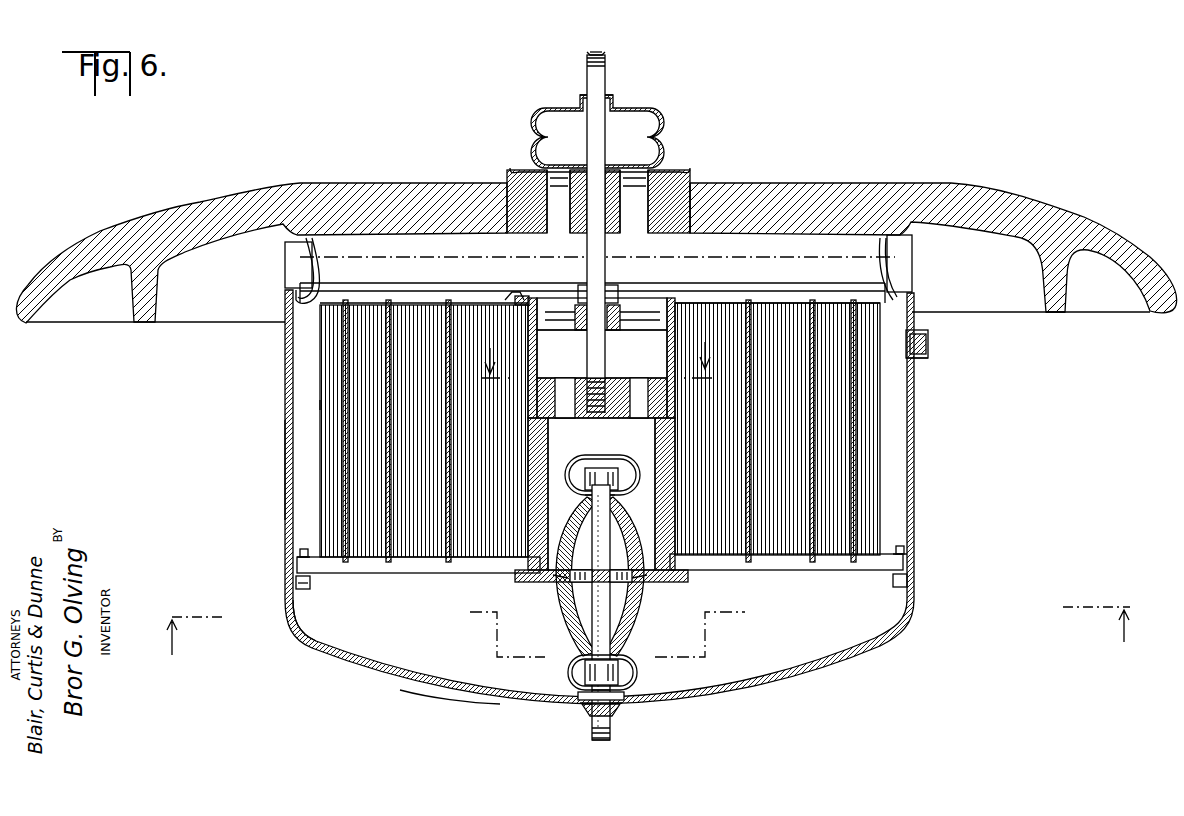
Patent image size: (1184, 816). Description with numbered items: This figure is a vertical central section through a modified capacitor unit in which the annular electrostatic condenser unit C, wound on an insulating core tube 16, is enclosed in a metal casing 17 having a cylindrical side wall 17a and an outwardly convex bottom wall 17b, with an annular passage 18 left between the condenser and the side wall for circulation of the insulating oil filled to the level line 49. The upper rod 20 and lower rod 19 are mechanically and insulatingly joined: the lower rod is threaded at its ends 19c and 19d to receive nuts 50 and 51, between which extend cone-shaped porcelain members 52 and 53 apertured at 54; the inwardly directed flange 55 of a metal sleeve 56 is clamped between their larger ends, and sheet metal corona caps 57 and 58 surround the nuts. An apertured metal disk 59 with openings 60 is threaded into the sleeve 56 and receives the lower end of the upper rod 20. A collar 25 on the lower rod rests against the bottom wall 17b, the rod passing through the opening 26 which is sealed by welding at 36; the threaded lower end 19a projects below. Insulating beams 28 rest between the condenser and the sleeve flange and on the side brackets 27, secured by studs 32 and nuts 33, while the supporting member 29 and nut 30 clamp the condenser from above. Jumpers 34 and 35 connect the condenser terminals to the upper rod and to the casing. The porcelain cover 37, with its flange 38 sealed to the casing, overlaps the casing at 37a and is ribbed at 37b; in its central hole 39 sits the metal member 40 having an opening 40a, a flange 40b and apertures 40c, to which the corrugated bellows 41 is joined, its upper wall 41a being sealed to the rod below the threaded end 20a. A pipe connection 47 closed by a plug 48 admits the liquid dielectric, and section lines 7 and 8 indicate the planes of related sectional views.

The section line 7- 7 is at (643, 625).
The section line 8- 8 is at (597, 365).
The insulating cylinder or tube 16 is at (530, 420).
The metal tank or casing 17 is at (292, 636).
The cylindrical side wall 17a is at (286, 476).
The outwardly convex bottom wall 17b is at (455, 700).
The outer annular passage or channel 18 is at (290, 352).
The lower rod 19 is at (610, 606).
The bolt threaded end 19a is at (606, 738).
The threaded end of lower rod 19c is at (600, 468).
The threaded end of lower rod 19d is at (625, 686).
The upper rod 20 is at (600, 348).
The threaded end portion of upper rod 20a is at (594, 52).
The collar or bushing 25 is at (580, 697).
The opening in bottom wall 26 is at (586, 708).
The supporting brackets 27 is at (302, 586).
The insulating beams or bars 28 is at (404, 573).
The supporting member 29 is at (640, 298).
The nut 30 is at (610, 287).
The threaded studs 32 is at (304, 548).
The nuts 33 is at (298, 556).
The conductor or jumper 34 is at (505, 298).
The jumper 35 is at (318, 286).
The weld 36 is at (618, 712).
The closure disk and insulator 37 is at (328, 180).
The overlapping portion of cover 37a is at (1018, 210).
The petticoat or ribs 37b is at (1068, 305).
The flange 38 is at (287, 256).
The central hole 39 is at (680, 200).
The metal member 40 is at (522, 172).
The central opening 40a is at (590, 210).
The upper peripheral flange 40b is at (680, 172).
The apertures 40c is at (655, 243).
The corrugated sheet metal bellows 41 is at (528, 138).
The upper wall of bellows 41a is at (578, 109).
The pipe connection or nipple 47 is at (913, 360).
The plug or cap 48 is at (929, 344).
The liquid level line 49 is at (402, 257).
The nut 50 is at (640, 478).
The nut 51 is at (618, 672).
The cone-shaped insulating member 52 is at (640, 495).
The cone-shaped insulating member 53 is at (636, 636).
The apertures 54 is at (562, 535).
The inwardly directed flange 55 is at (538, 582).
The metal sleeve-like casting 56 is at (537, 462).
The corona cap 57 is at (632, 462).
The corona cap 58 is at (570, 672).
The metal disk 59 is at (601, 494).
The apertures 60 is at (562, 380).
The electrostatic condenser unit C is at (318, 405).